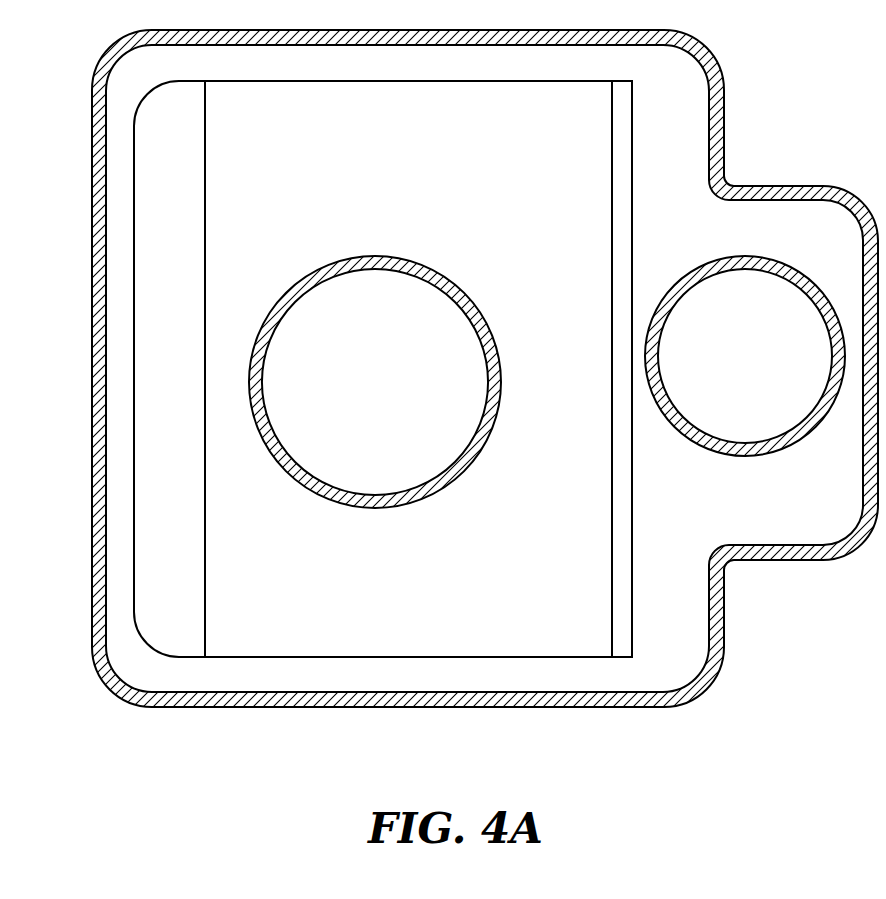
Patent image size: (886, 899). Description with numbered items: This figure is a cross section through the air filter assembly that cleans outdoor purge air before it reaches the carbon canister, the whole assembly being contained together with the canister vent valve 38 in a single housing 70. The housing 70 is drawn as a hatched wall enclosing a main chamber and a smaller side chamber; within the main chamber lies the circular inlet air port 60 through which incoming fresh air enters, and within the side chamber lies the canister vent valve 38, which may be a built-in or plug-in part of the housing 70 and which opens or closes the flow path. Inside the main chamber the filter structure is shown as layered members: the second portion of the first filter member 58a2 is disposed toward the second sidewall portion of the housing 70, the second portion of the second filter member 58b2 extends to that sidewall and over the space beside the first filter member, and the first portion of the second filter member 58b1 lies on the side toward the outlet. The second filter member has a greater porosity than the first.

The housing 70 is at (742, 58).
The second portion of the first filter member 58a2 is at (223, 532).
The second portion of the second filter member 58b2 is at (158, 242).
The first portion of the second filter member 58b1 is at (622, 208).
The inlet air port 60 is at (392, 394).
The canister vent valve 38 is at (758, 368).